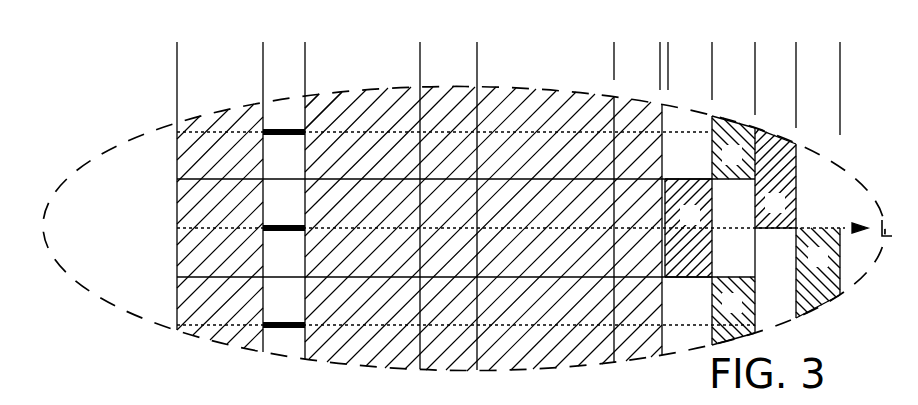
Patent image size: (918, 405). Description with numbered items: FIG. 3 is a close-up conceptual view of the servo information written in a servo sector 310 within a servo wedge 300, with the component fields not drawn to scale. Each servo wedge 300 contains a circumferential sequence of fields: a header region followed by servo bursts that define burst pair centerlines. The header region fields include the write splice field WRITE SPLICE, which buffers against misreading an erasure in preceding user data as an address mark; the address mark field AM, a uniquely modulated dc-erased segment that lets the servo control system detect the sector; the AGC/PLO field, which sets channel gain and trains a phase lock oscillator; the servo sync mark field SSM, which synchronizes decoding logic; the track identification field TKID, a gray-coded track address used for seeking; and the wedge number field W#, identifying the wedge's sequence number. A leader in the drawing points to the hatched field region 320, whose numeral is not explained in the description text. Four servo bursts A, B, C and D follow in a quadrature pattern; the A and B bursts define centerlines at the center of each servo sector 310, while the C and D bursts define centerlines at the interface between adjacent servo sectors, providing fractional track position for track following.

The servo wedge 300 is at (177, 15).
The servo sector 310 is at (172, 178).
The hatched servo field region (numeral cut off at sheet edge) 320 is at (334, 394).